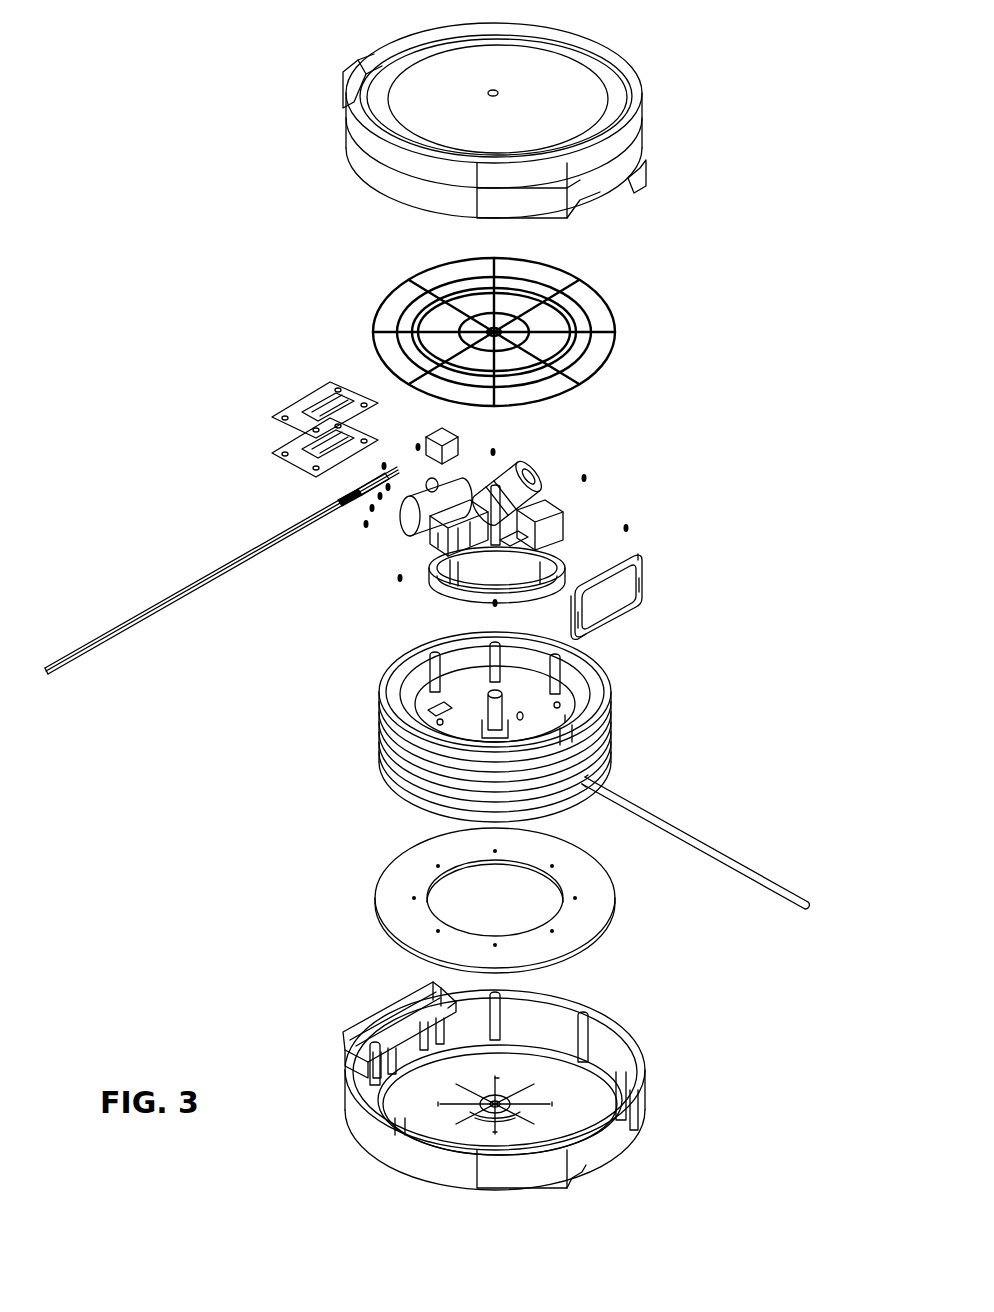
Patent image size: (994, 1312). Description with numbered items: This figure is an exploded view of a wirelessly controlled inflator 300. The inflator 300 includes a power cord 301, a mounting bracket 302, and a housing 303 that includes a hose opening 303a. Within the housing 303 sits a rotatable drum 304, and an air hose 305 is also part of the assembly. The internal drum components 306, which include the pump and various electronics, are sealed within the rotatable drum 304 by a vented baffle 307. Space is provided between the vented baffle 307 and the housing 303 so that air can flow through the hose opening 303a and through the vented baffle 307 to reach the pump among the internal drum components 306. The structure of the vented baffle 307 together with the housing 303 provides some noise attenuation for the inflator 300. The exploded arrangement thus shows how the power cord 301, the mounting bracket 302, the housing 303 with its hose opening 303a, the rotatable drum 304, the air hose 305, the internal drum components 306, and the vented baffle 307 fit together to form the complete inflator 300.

The inflator 300 is at (104, 74).
The power cord 301 is at (94, 642).
The mounting bracket 302 is at (300, 402).
The housing 303 is at (645, 155).
The hose opening 303a is at (636, 605).
The rotatable drum 304 is at (448, 686).
The air hose 305 is at (710, 845).
The internal drum components 306 is at (590, 508).
The vented baffle 307 is at (614, 338).